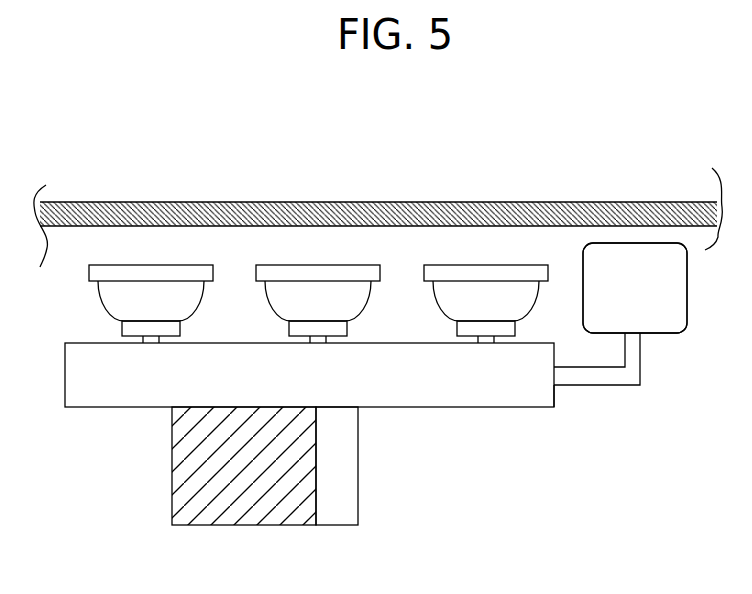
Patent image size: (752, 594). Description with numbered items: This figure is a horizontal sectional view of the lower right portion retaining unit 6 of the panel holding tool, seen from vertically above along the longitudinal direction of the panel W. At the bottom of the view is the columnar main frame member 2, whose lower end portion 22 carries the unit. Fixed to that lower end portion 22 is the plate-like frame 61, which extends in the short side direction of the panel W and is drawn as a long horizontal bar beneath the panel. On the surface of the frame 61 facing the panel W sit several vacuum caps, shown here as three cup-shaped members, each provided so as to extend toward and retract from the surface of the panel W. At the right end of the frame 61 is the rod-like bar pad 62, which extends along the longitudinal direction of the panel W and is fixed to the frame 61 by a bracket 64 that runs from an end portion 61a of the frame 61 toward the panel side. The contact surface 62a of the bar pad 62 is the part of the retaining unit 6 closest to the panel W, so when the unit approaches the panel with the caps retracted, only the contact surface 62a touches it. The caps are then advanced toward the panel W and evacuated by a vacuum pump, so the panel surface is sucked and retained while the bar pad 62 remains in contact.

The panel W is at (507, 203).
The frame 61 is at (443, 400).
The end portion of the frame 61a is at (555, 400).
The bar pad 62 is at (665, 333).
The contact surface 62a is at (636, 243).
The bracket 64 is at (617, 384).
The main frame member 2 is at (260, 518).
The lower end portion 22 is at (347, 482).
The lower right portion retaining unit 6 is at (590, 493).